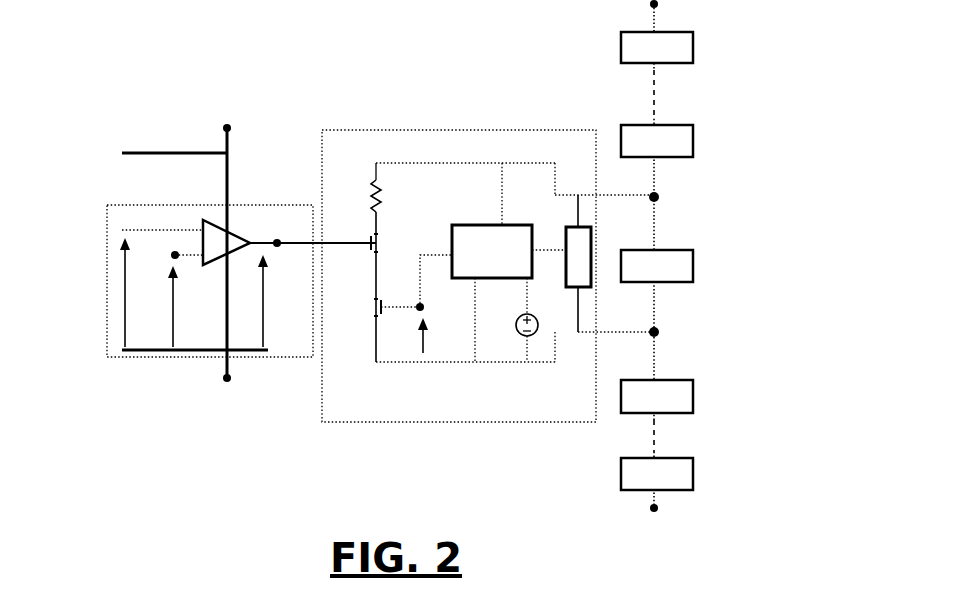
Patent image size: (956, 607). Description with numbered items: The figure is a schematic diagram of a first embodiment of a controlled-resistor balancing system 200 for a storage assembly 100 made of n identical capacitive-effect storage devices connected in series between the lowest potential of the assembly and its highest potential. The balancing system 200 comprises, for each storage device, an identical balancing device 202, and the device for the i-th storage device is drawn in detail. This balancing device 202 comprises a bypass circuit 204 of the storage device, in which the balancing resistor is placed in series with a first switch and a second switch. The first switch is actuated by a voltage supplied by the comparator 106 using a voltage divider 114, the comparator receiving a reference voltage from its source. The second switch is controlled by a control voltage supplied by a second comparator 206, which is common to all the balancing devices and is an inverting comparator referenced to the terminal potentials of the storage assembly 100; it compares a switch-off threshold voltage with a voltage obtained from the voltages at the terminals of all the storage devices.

The storage assembly 100 is at (757, 80).
The comparator 106 is at (509, 251).
The voltage divider 114 is at (573, 226).
The balancing system 200 is at (225, 448).
The balancing device 202 is at (387, 130).
The bypass circuit 204 is at (382, 363).
The second comparator 206 is at (113, 204).